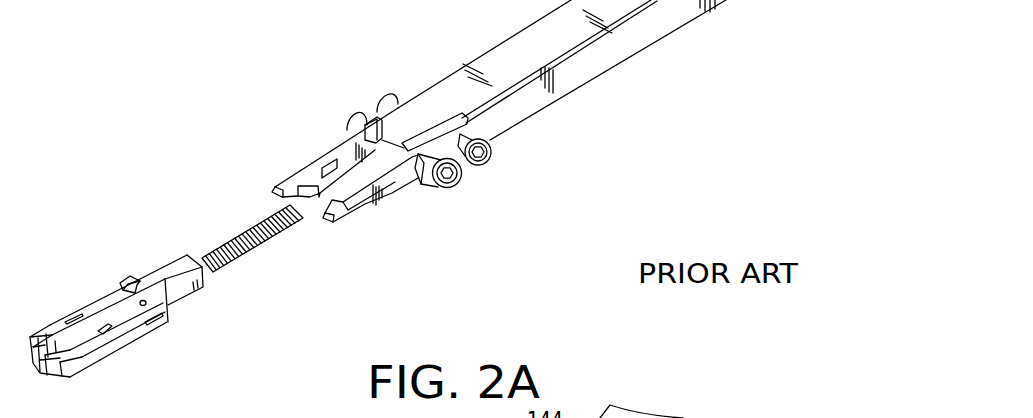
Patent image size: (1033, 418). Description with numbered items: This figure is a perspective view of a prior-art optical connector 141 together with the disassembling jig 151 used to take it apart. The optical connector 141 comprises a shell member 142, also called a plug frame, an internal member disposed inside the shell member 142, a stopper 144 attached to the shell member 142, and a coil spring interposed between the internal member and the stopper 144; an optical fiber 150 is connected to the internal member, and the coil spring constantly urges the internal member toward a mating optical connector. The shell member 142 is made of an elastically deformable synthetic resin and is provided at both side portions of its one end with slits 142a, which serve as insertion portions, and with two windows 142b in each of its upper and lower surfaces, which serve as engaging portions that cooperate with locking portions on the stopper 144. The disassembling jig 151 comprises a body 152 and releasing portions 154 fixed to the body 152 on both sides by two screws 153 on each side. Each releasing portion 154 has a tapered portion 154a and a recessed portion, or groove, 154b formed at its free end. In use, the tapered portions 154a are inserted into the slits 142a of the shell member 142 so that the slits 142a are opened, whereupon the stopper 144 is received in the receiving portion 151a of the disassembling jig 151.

The optical connector 141 is at (390, 270).
The shell member 142 is at (100, 307).
The slits 142a is at (167, 316).
The windows 142b is at (120, 280).
The stopper 144 is at (160, 263).
The optical fiber 150 is at (220, 247).
The disassembling jig 151 is at (809, 16).
The receiving portion 151a is at (393, 193).
The body 152 is at (663, 38).
The screws 153 is at (490, 157).
The releasing portions 154 is at (334, 147).
The tapered portion 154a is at (280, 177).
The recessed portion 154b is at (318, 190).